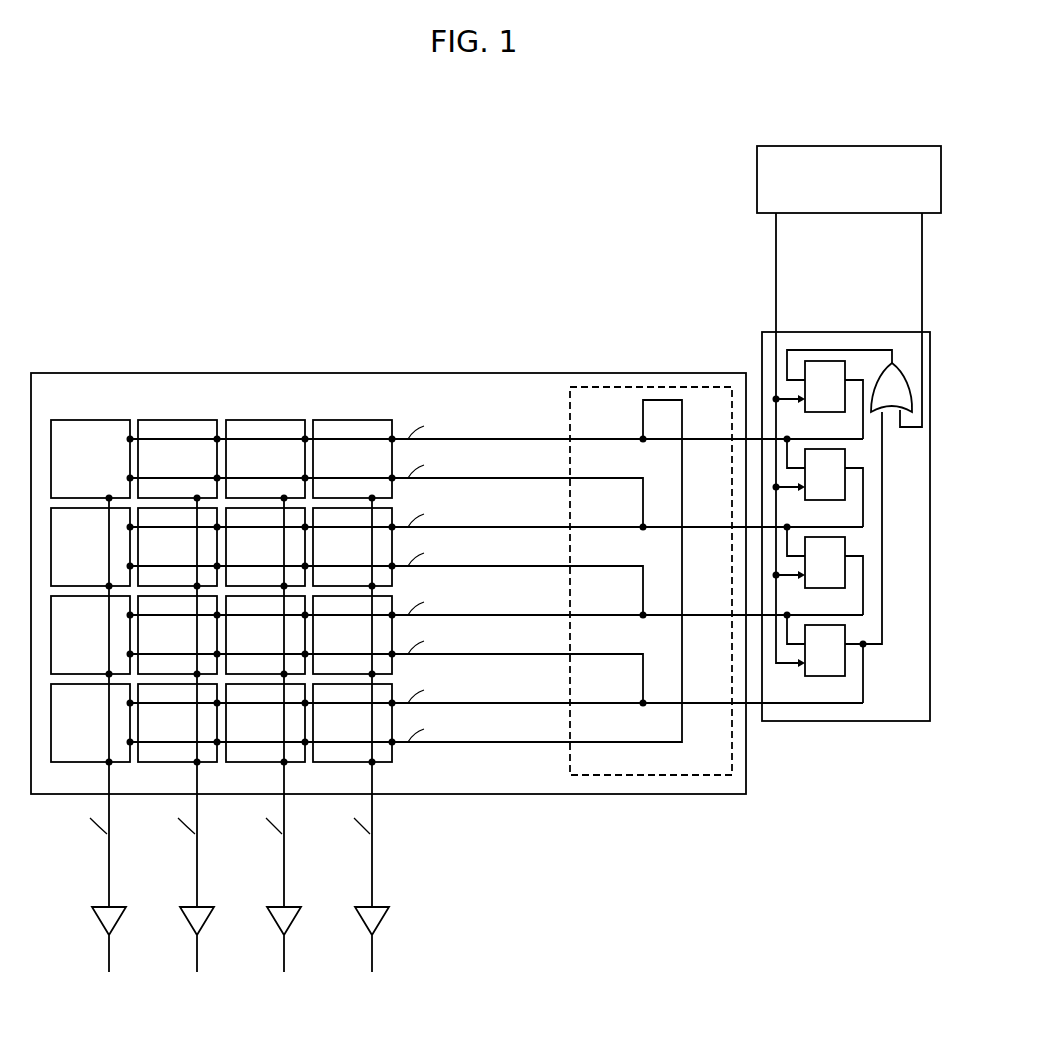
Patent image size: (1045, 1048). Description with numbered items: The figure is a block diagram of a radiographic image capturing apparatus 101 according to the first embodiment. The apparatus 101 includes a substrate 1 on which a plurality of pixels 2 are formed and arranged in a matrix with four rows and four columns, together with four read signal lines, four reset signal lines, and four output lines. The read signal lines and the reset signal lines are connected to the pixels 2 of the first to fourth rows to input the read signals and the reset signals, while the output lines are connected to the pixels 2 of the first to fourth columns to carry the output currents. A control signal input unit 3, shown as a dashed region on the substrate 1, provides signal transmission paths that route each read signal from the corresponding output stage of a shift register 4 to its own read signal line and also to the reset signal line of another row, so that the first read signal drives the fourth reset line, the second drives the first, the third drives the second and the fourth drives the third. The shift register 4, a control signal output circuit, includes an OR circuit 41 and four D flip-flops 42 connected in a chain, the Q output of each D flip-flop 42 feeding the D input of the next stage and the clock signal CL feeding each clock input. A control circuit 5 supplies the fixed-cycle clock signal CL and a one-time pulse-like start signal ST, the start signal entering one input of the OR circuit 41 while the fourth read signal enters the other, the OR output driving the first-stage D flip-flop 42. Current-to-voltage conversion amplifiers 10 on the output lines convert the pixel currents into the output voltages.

The radiographic image capturing apparatus 101 is at (712, 106).
The substrate 1 is at (70, 374).
The pixel 2 is at (72, 422).
The control signal input unit 3 is at (568, 766).
The shift register 4 is at (897, 332).
The OR circuit 41 is at (887, 415).
The D flip-flop 42 is at (832, 413).
The control circuit 5 is at (870, 146).
The current-to-voltage conversion amplifier 10 is at (100, 921).